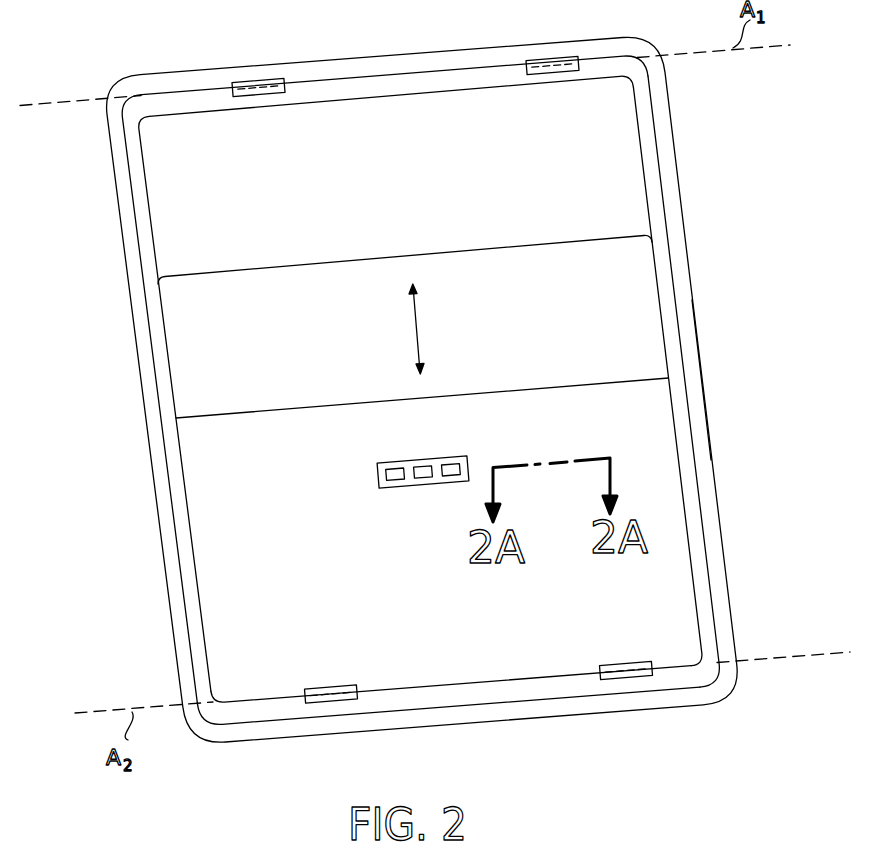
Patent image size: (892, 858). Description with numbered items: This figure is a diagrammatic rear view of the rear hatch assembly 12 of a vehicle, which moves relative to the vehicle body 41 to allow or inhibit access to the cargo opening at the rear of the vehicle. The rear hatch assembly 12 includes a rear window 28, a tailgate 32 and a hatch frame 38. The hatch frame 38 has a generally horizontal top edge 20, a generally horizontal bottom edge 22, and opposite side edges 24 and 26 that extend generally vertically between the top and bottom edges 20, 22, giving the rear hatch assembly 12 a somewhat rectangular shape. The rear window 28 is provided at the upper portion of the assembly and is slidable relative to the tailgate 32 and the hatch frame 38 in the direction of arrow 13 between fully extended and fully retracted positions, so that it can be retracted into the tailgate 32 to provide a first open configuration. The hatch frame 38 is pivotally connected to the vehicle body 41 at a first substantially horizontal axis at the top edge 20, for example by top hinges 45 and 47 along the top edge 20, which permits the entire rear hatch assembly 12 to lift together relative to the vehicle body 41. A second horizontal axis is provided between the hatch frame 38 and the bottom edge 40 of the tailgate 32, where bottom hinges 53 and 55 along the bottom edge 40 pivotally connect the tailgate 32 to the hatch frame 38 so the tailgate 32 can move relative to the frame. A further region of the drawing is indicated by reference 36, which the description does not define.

The rear hatch assembly 12 is at (724, 156).
The arrow 13 is at (430, 326).
The top edge 20 is at (412, 73).
The bottom edge 22 is at (548, 699).
The side edge 24 is at (152, 353).
The side edge 26 is at (680, 327).
The rear window 28 is at (292, 282).
The tailgate 32 is at (218, 563).
The inner frame 36 is at (122, 480).
The hatch frame 38 is at (666, 272).
The bottom edge of the tailgate 40 is at (460, 683).
The vehicle body 41 is at (698, 382).
The top hinge 45 is at (258, 80).
The top hinge 47 is at (552, 58).
The bottom hinge 53 is at (330, 687).
The bottom hinge 55 is at (626, 663).